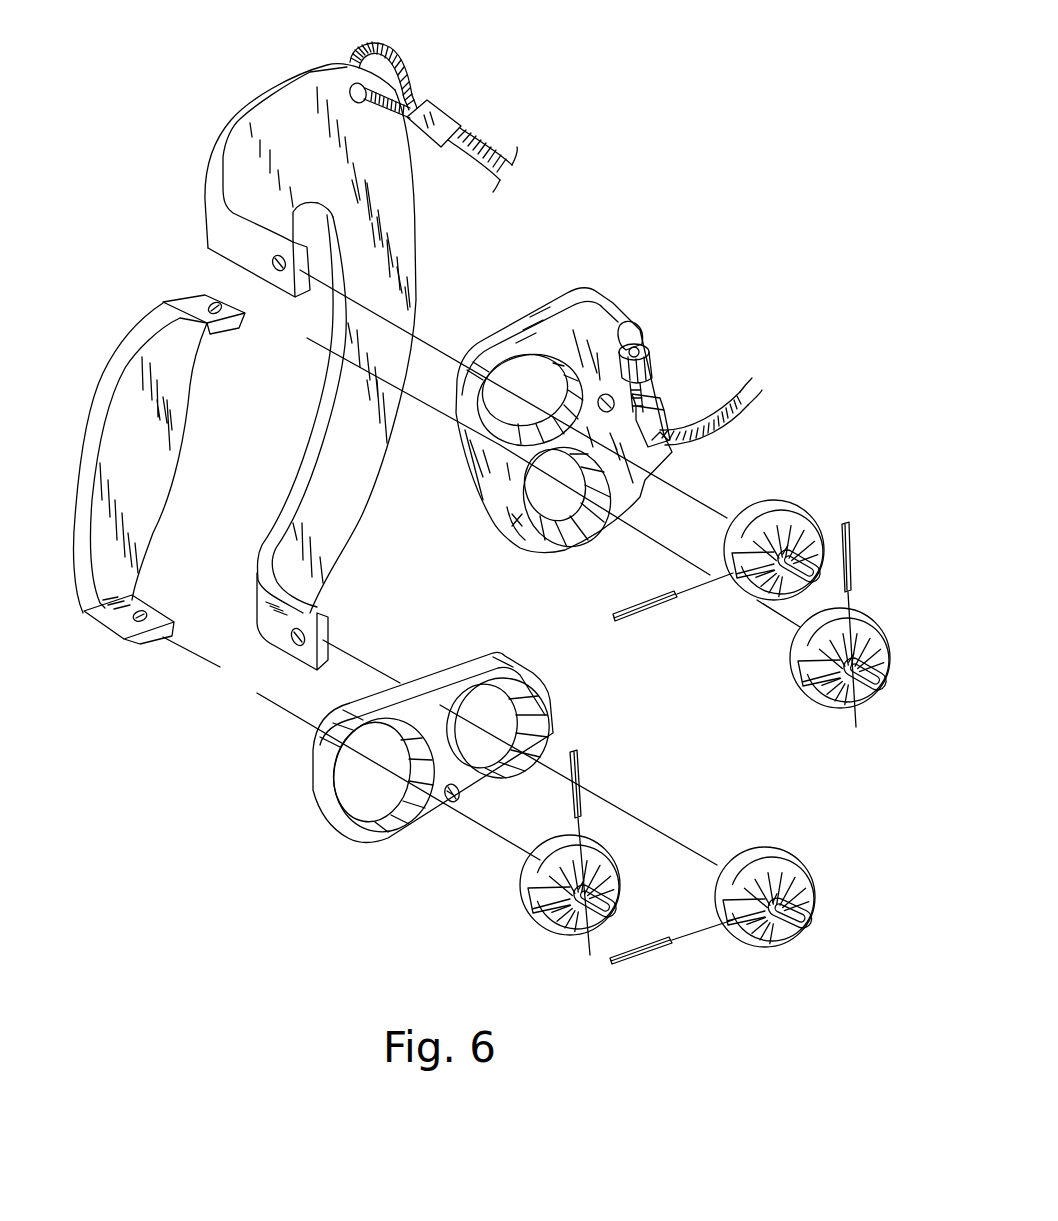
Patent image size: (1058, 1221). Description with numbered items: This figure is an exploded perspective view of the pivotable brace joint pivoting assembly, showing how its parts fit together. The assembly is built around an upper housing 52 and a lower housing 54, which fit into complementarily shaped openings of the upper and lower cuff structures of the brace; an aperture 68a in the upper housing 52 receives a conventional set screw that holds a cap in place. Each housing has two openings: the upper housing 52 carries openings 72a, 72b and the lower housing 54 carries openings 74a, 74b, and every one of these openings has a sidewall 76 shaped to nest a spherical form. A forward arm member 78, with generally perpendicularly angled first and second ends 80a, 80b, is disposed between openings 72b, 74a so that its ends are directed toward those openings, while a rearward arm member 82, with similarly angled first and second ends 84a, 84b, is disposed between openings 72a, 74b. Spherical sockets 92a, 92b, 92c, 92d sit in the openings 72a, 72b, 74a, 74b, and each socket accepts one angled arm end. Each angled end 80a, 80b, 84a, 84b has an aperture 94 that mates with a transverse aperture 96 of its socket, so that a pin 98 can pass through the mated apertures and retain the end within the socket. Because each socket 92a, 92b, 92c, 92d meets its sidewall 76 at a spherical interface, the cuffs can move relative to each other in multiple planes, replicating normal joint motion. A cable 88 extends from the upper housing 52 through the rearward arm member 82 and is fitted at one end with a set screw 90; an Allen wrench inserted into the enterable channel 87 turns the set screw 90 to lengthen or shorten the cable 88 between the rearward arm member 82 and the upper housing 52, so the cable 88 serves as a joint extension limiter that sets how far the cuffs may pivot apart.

The upper housing 52 is at (562, 298).
The lower housing 54 is at (370, 837).
The aperture 68a is at (603, 393).
The opening 72a is at (527, 377).
The opening 72b is at (557, 553).
The opening 74a is at (363, 777).
The opening 74b is at (503, 708).
The sidewall 76 is at (510, 457).
The forward arm member 78 is at (100, 413).
The first end 80a is at (212, 330).
The second end 80b is at (142, 600).
The rearward arm member 82 is at (287, 87).
The first end 84a is at (240, 248).
The second end 84b is at (322, 610).
The enterable channel 87 is at (627, 328).
The cable 88 is at (730, 430).
The set screw 90 is at (650, 357).
The spherical socket 92a is at (765, 502).
The spherical socket 92b is at (877, 617).
The spherical socket 92c is at (530, 905).
The spherical socket 92d is at (773, 848).
The aperture 94 is at (272, 266).
The transverse aperture 96 is at (765, 597).
The pin 98 is at (857, 552).